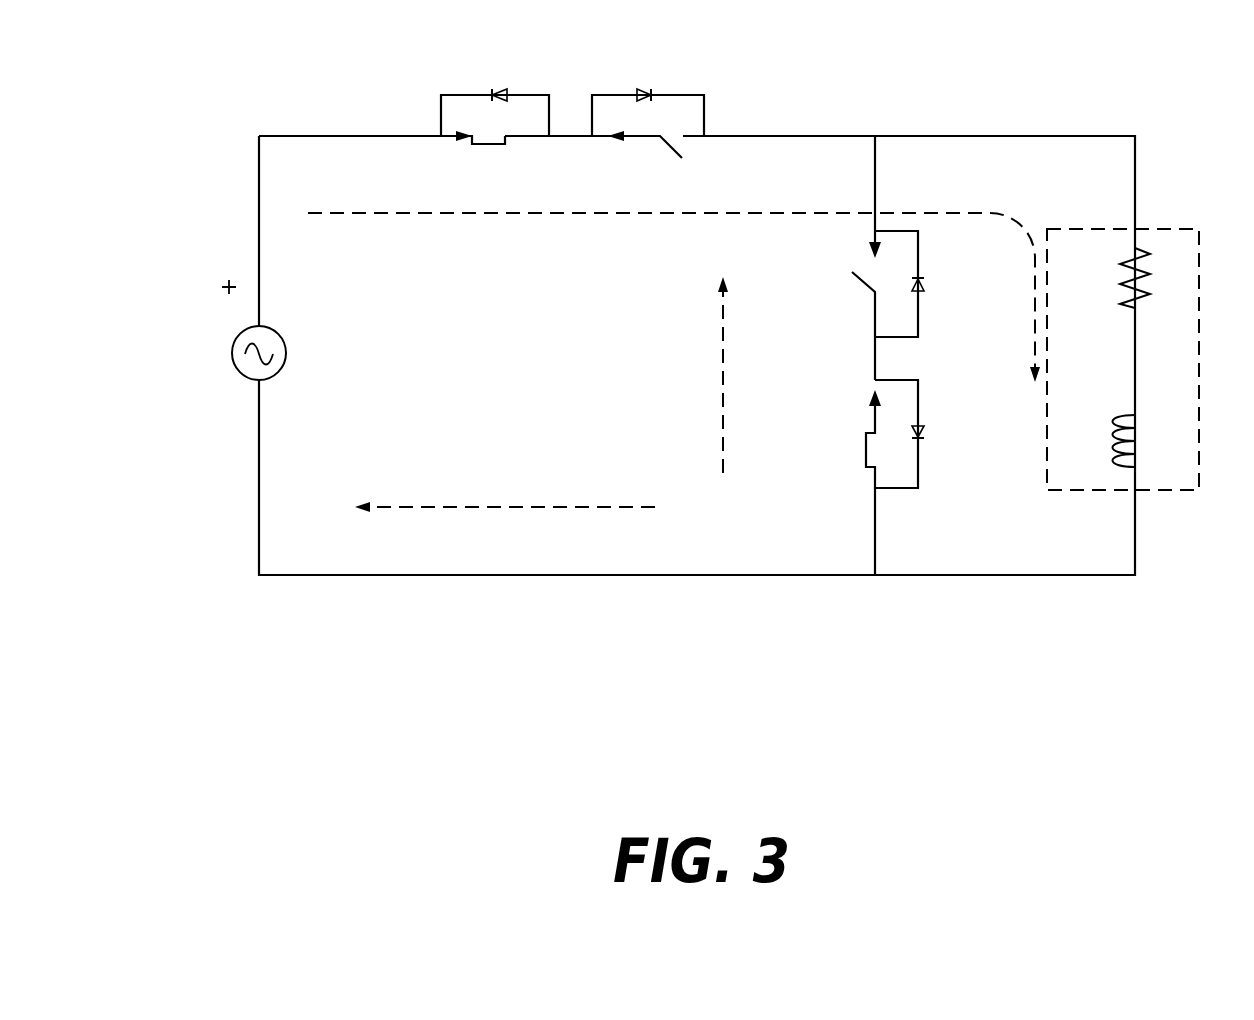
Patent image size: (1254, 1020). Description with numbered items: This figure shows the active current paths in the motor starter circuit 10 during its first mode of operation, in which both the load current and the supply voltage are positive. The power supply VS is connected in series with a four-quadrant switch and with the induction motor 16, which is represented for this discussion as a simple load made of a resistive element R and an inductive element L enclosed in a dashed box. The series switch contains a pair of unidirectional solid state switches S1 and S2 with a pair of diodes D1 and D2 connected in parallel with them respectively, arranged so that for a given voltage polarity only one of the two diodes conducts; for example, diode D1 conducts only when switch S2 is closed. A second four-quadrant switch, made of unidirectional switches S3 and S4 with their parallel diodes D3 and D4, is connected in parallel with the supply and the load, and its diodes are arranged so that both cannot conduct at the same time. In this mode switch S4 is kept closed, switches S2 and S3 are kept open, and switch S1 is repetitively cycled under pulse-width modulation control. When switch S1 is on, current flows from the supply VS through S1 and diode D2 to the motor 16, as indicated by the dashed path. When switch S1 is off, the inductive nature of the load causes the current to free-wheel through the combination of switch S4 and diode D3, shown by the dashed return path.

The motor starter circuit 10 is at (335, 575).
The induction motor 16 is at (1159, 229).
The power supply VS is at (223, 330).
The unidirectional solid state switch S1 is at (480, 160).
The unidirectional solid state switch S2 is at (645, 160).
The unidirectional solid state switch S3 is at (838, 289).
The unidirectional solid state switch S4 is at (838, 439).
The diode D1 is at (495, 83).
The diode D2 is at (648, 83).
The diode D3 is at (920, 284).
The diode D4 is at (920, 434).
The resistive load element R is at (1111, 278).
The inductive load element L is at (1104, 441).